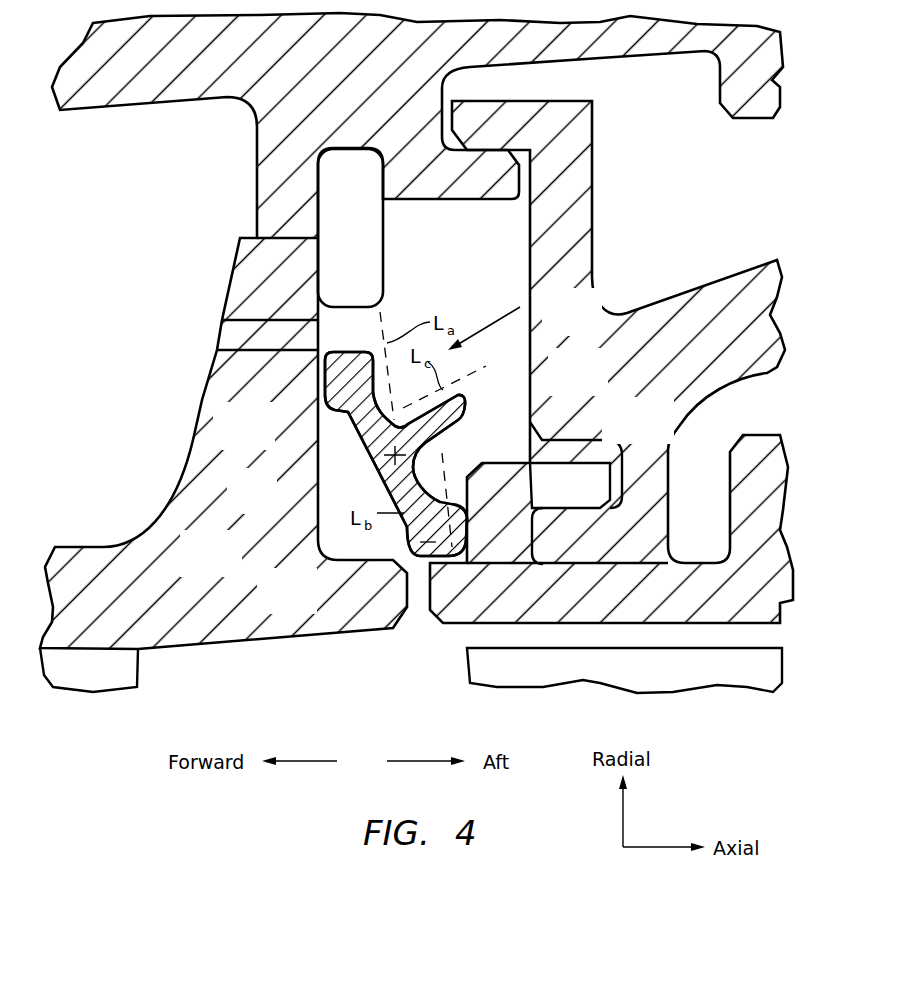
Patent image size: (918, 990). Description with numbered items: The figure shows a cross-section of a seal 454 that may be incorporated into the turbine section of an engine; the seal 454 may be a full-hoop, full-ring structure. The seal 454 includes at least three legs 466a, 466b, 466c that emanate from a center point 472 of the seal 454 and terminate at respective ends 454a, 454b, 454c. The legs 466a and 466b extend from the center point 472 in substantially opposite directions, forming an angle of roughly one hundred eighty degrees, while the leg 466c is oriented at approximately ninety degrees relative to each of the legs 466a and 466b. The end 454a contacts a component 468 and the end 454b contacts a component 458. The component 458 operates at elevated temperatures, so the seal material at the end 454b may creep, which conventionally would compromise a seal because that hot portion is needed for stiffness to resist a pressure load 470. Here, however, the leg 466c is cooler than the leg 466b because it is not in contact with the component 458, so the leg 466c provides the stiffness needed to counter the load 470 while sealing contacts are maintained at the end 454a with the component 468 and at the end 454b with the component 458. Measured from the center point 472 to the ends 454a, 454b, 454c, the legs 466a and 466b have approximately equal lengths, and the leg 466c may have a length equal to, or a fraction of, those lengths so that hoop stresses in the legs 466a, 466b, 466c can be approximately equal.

The component 468 is at (270, 258).
The component 458 is at (487, 530).
The seal 454 is at (368, 457).
The end 454a is at (336, 373).
The end 454b is at (400, 543).
The end 454c is at (467, 398).
The leg 466a is at (370, 425).
The leg 466b is at (384, 488).
The leg 466c is at (447, 435).
The pressure load 470 is at (493, 323).
The center point 472 is at (405, 453).